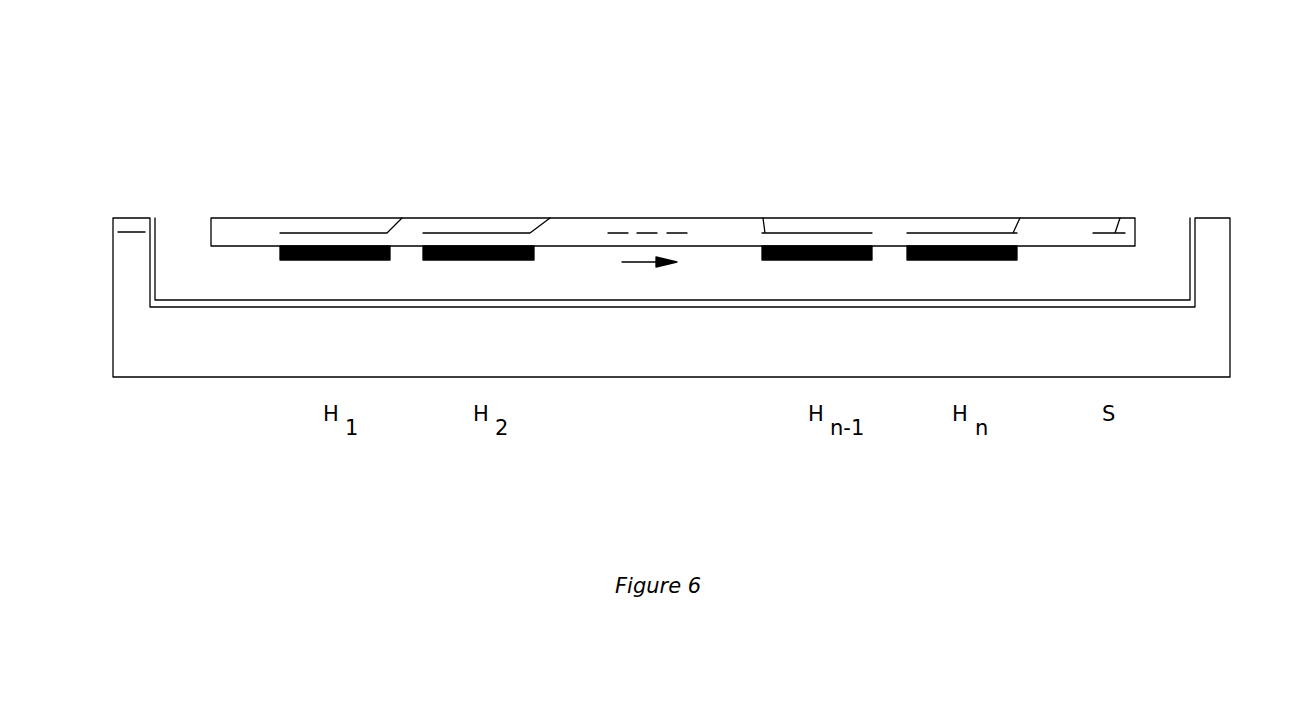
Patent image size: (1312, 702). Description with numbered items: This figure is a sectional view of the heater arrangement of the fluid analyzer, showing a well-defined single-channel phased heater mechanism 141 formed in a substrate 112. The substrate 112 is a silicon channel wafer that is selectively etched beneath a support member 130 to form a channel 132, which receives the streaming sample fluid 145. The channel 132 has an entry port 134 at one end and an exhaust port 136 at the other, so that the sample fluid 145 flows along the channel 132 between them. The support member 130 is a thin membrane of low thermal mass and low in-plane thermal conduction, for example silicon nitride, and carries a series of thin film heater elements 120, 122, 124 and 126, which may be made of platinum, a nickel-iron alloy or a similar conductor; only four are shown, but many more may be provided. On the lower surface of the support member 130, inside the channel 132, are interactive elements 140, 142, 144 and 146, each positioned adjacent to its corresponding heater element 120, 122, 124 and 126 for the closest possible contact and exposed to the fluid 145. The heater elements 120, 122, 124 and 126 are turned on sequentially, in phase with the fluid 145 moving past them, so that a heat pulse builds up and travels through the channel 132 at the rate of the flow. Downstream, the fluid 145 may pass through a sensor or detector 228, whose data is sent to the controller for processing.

The substrate 112 is at (1212, 334).
The heater element 120 is at (402, 218).
The heater element 122 is at (550, 218).
The heater element 124 is at (763, 218).
The heater element 126 is at (1020, 218).
The support member 130 is at (239, 218).
The channel 132 is at (743, 272).
The entry port 134 is at (187, 234).
The exhaust port 136 is at (1153, 232).
The interactive element 140 is at (305, 260).
The phased heater mechanism 141 is at (793, 100).
The interactive element 142 is at (457, 260).
The interactive element 144 is at (838, 260).
The sample fluid stream 145 is at (645, 262).
The interactive element 146 is at (980, 260).
The sensor or detector 228 is at (1120, 218).